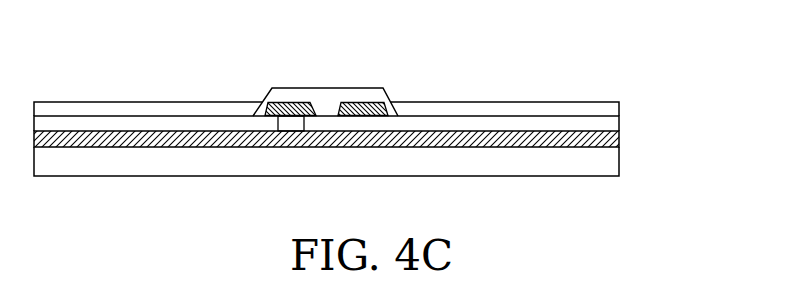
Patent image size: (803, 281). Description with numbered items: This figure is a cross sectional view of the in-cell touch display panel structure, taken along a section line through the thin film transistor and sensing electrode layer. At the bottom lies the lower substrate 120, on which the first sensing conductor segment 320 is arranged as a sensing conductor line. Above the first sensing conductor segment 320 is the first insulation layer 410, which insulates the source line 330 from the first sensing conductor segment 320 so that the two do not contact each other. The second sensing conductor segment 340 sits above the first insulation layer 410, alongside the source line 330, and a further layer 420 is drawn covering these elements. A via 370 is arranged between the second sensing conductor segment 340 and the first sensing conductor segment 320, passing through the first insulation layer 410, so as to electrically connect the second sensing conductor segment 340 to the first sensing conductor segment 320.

The lower substrate 120 is at (619, 167).
The first sensing conductor segment 320 is at (619, 138).
The first insulation layer 410 is at (619, 123).
The second layer 420 is at (619, 110).
The source line 330 is at (392, 104).
The second sensing conductor segment 340 is at (283, 103).
The via 370 is at (290, 125).